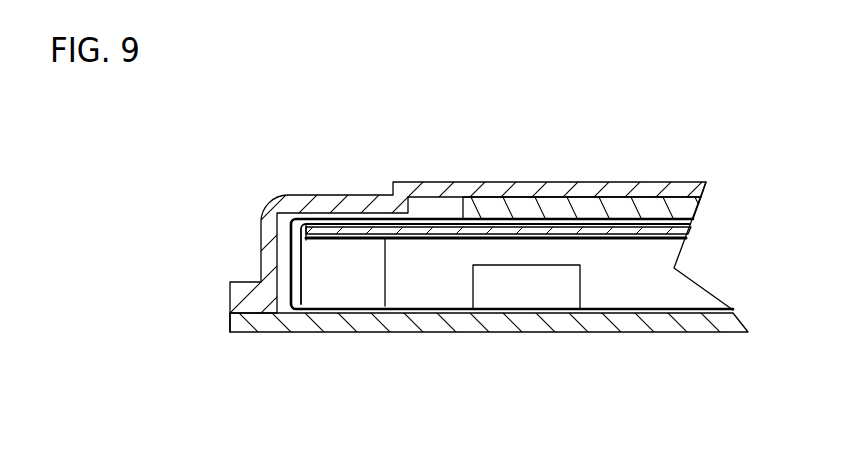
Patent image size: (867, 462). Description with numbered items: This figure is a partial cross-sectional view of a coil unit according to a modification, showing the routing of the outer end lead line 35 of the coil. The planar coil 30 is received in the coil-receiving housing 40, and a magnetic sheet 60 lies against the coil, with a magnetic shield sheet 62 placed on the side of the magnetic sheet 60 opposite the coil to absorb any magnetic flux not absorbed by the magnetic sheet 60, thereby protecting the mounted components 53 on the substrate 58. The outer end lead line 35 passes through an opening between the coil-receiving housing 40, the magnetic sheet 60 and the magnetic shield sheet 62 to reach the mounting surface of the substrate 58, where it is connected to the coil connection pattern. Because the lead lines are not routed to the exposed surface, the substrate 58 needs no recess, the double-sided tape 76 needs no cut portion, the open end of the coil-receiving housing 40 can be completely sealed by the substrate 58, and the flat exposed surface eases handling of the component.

The planar coil 30 is at (628, 208).
The outer end lead line 35 is at (298, 258).
The coil-receiving housing 40 is at (487, 182).
The mounted components 53 is at (540, 297).
The substrate 58 is at (403, 335).
The magnetic sheet 60 is at (673, 221).
The magnetic shield sheet 62 is at (660, 241).
The double-sided tape 76 is at (229, 321).